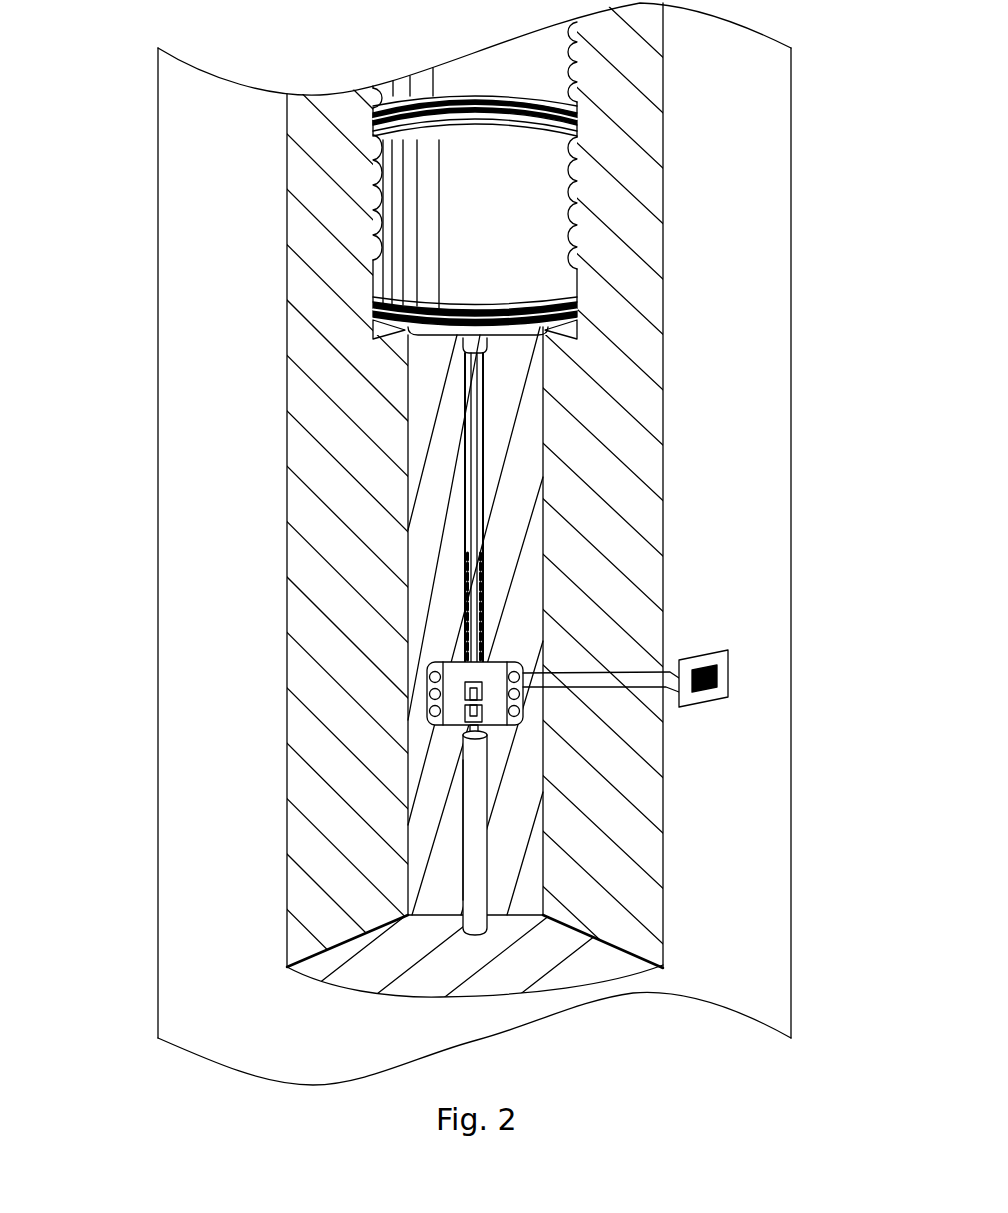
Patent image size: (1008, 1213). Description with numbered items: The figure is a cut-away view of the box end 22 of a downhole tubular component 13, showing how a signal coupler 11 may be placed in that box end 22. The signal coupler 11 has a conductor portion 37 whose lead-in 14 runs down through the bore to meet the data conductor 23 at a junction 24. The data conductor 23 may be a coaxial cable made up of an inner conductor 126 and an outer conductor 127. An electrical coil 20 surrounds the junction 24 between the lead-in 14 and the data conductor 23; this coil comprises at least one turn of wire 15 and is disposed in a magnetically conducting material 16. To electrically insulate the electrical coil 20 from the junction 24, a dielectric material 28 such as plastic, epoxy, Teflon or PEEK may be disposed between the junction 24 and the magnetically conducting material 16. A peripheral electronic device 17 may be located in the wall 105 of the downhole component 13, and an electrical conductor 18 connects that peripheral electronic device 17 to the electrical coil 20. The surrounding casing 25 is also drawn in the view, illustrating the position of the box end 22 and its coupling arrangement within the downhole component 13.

The signal coupler 11 is at (470, 296).
The downhole tubular component 13 is at (130, 148).
The lead-in 14 is at (475, 458).
The turn of wire 15 is at (429, 677).
The magnetically conducting material 16 is at (430, 665).
The peripheral electronic device 17 is at (715, 665).
The electrical conductor 18 is at (583, 679).
The electrical coil 20 is at (440, 650).
The box end 22 is at (557, 52).
The data conductor 23 is at (495, 865).
The junction 24 is at (505, 662).
The casing 25 is at (757, 168).
The dielectric material 28 is at (450, 723).
The conductor portion 37 is at (491, 559).
The wall 105 is at (752, 376).
The inner conductor 126 is at (487, 727).
The outer conductor 127 is at (481, 825).